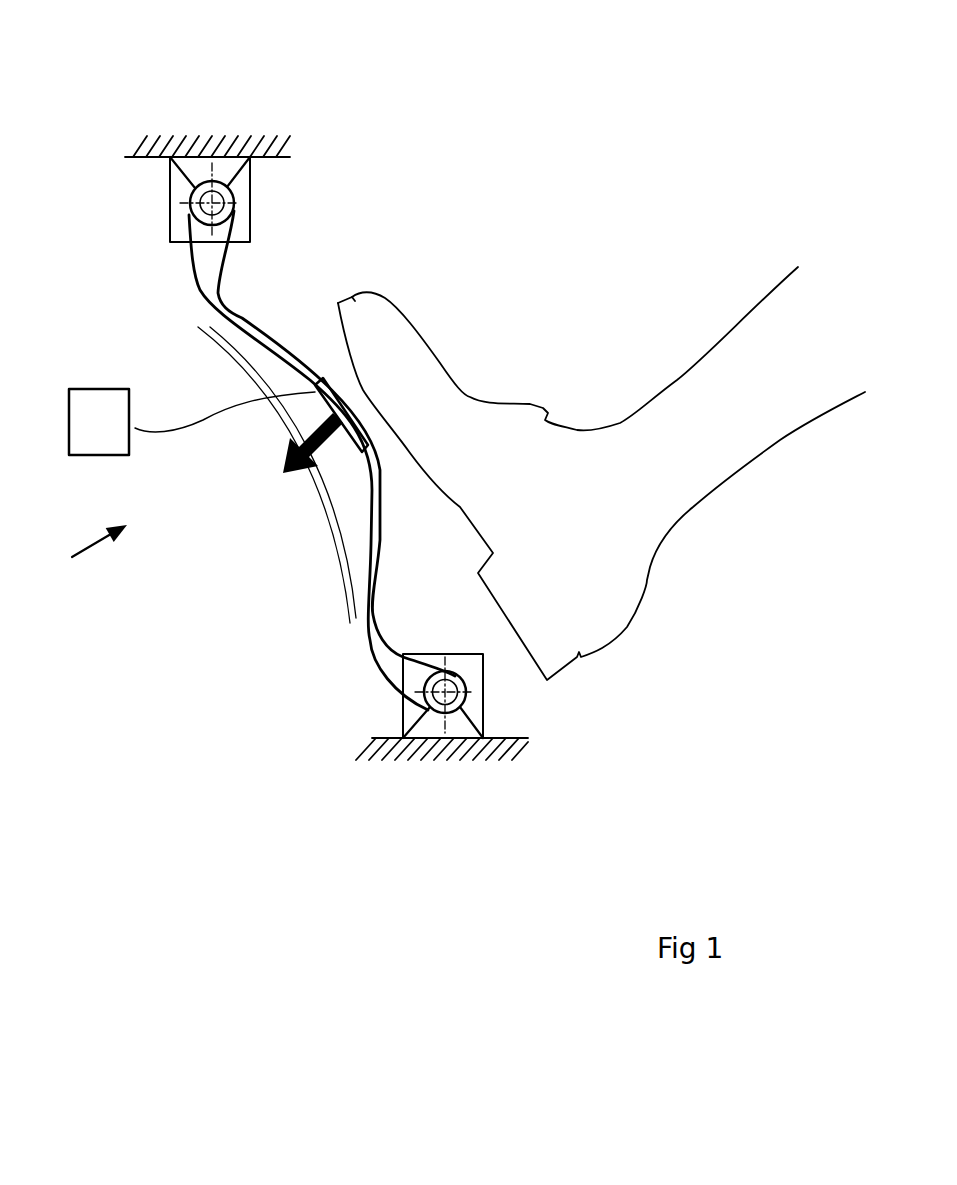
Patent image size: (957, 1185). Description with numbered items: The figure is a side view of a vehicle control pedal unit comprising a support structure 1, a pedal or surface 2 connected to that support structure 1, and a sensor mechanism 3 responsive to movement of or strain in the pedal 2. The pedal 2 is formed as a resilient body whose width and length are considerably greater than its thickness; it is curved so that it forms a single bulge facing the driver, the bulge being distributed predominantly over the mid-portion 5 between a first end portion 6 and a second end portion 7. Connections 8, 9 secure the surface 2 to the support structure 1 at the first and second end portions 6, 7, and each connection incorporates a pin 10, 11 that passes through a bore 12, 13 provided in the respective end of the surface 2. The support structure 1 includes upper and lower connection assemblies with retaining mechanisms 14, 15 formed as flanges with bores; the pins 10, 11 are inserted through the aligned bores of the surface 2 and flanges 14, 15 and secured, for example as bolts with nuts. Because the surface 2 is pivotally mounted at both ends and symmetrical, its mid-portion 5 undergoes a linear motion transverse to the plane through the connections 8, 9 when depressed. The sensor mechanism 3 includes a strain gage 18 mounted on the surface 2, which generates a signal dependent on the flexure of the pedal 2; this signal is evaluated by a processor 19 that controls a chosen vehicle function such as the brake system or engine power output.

The support structure 1 is at (289, 106).
The pedal or surface 2 is at (363, 395).
The sensor mechanism 3 is at (84, 553).
The mid-portion 5 is at (360, 431).
The first end portion 6 is at (215, 216).
The second end portion 7 is at (443, 676).
The connection 8 is at (250, 204).
The connection 9 is at (480, 693).
The pin 10 is at (202, 207).
The pin 11 is at (430, 693).
The bore 12 is at (224, 191).
The bore 13 is at (456, 670).
The retaining mechanism 14 is at (195, 175).
The retaining mechanism 15 is at (432, 728).
The strain gage 18 is at (367, 440).
The processor 19 is at (192, 441).